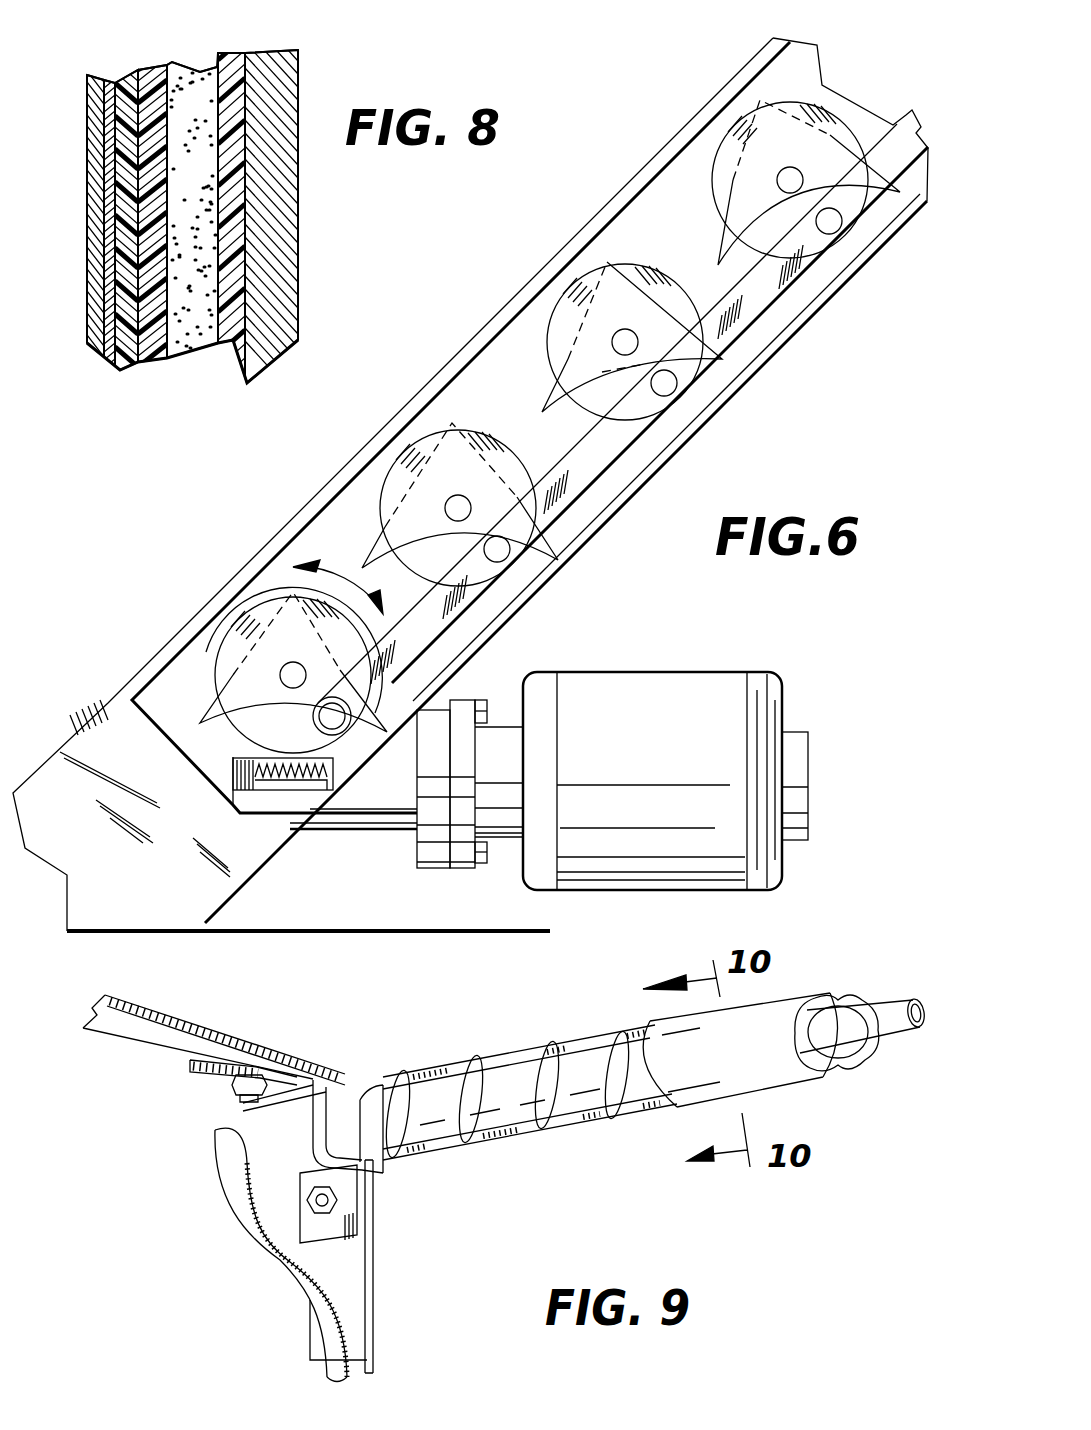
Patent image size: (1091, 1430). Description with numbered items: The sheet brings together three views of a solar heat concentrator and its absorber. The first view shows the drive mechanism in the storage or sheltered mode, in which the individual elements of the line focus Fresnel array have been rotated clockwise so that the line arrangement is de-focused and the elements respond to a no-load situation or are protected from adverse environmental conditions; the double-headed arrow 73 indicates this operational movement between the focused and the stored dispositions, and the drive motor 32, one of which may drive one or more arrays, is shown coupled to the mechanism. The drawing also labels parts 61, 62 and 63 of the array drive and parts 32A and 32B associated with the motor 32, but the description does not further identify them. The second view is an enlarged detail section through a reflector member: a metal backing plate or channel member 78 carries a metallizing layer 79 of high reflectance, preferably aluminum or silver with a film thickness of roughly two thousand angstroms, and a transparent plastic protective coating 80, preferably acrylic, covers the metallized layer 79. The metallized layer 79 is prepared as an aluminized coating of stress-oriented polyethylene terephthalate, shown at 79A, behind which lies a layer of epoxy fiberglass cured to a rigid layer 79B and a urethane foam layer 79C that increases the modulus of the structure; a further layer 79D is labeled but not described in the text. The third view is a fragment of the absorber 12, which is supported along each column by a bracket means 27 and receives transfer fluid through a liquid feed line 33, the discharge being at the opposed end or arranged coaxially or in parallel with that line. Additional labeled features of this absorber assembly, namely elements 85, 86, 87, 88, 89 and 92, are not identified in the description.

In FIG. 8, the metal backing plate 78 is at (298, 256).
In FIG. 8, the metallizing layer 79 is at (111, 84).
In FIG. 8, the aluminized coating of stress-oriented polyethylene terephthalate 79A is at (133, 81).
In FIG. 8, the epoxy fiberglass layer 79B is at (150, 352).
In FIG. 8, the urethane foam layer 79C is at (200, 80).
In FIG. 8, the inner liner ply 79D is at (233, 62).
In FIG. 8, the transparent plastic protective coating 80 is at (86, 135).
In FIG. 6, the rotor disc 61 is at (742, 172).
In FIG. 6, the drive rail 62 is at (831, 258).
In FIG. 6, the drive pin hole 63 is at (840, 234).
In FIG. 6, the double-headed arrow 73 is at (342, 572).
In FIG. 6, the drive motor 32 is at (647, 672).
In FIG. 6, the motor mount rack 32A is at (292, 792).
In FIG. 6, the rotor housing bore 32B is at (204, 648).
In FIG. 9, the bracket means 27 is at (205, 1027).
In FIG. 9, the clamp bracket 92 is at (360, 1097).
In FIG. 9, the absorber 12 is at (540, 1043).
In FIG. 9, the retaining rings 88 is at (486, 1058).
In FIG. 9, the sleeve 87 is at (797, 1080).
In FIG. 9, the inner pipe 85 is at (902, 1037).
In FIG. 9, the end fitting 86 is at (870, 997).
In FIG. 9, the clamp nut 89 is at (350, 1197).
In FIG. 9, the liquid feed line 33 is at (247, 1250).